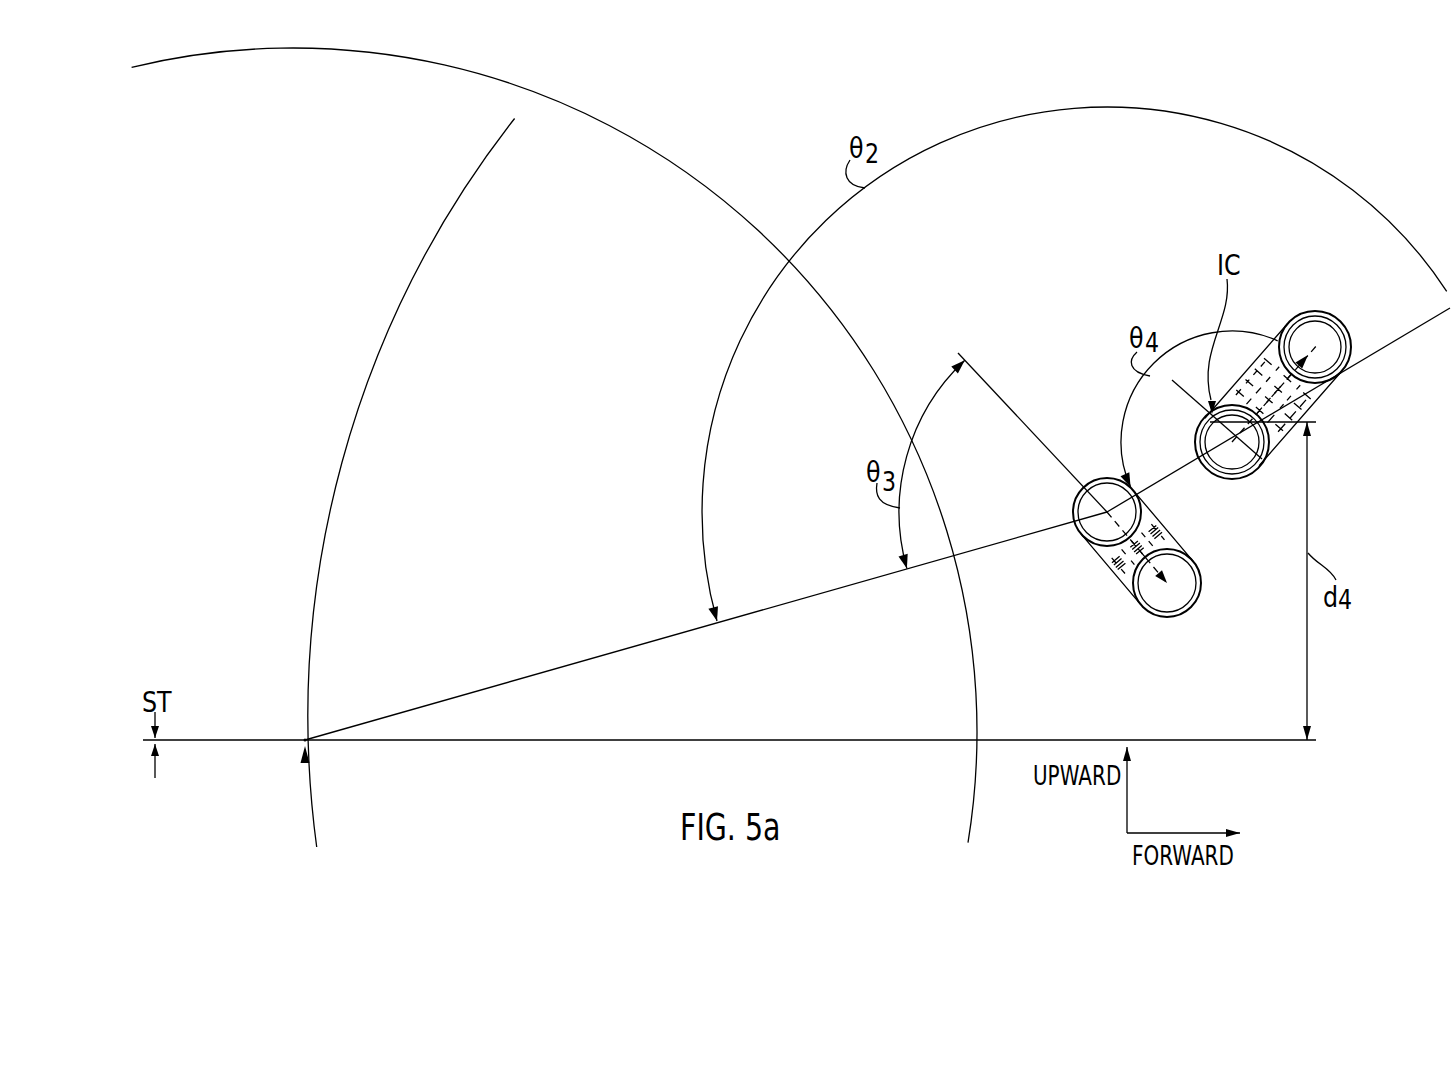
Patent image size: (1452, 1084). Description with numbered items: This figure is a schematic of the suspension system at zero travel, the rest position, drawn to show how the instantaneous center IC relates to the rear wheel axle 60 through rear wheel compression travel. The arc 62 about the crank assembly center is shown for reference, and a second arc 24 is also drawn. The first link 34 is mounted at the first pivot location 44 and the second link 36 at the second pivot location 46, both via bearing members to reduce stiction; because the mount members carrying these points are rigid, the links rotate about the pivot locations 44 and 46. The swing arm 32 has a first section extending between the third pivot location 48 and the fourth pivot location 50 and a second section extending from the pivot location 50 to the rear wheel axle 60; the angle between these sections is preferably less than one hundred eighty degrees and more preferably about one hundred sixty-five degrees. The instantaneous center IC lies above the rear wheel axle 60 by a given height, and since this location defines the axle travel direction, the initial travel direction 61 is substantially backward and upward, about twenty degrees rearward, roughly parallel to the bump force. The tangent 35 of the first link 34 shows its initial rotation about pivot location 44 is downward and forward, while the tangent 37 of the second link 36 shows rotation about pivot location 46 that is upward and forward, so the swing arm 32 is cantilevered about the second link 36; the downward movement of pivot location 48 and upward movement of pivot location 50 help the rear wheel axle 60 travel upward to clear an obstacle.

The arc of travel 24 is at (705, 187).
The swing arm 32 is at (642, 645).
The first link 34 is at (1310, 400).
The tangent of the first link 35 is at (1263, 453).
The second link 36 is at (1103, 565).
The tangent of the second link 37 is at (1080, 513).
The first pivot location 44 is at (1312, 312).
The second pivot location 46 is at (1158, 617).
The third pivot location 48 is at (1237, 468).
The fourth pivot location 50 is at (1107, 480).
The rear wheel axle 60 is at (300, 736).
The initial travel direction 61 is at (380, 803).
The arc about the crank assembly center 62 is at (380, 528).